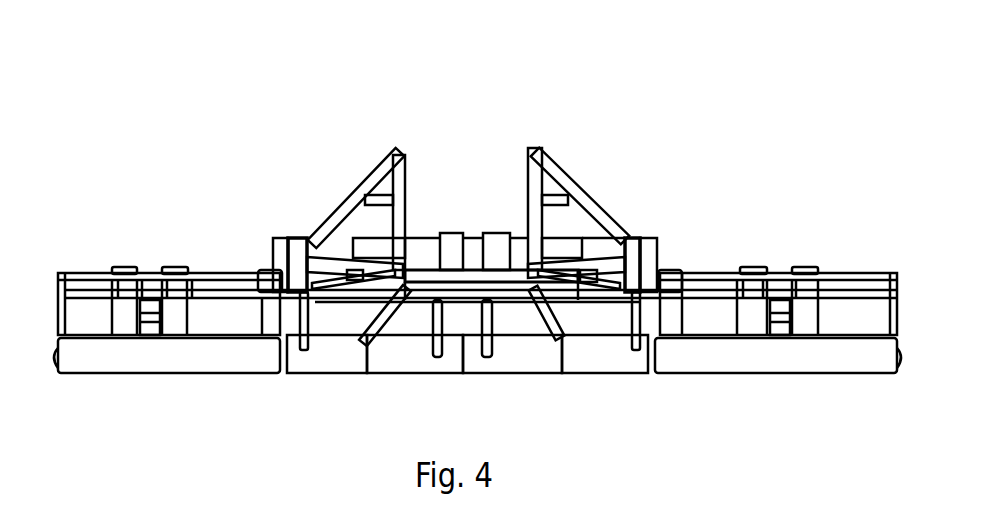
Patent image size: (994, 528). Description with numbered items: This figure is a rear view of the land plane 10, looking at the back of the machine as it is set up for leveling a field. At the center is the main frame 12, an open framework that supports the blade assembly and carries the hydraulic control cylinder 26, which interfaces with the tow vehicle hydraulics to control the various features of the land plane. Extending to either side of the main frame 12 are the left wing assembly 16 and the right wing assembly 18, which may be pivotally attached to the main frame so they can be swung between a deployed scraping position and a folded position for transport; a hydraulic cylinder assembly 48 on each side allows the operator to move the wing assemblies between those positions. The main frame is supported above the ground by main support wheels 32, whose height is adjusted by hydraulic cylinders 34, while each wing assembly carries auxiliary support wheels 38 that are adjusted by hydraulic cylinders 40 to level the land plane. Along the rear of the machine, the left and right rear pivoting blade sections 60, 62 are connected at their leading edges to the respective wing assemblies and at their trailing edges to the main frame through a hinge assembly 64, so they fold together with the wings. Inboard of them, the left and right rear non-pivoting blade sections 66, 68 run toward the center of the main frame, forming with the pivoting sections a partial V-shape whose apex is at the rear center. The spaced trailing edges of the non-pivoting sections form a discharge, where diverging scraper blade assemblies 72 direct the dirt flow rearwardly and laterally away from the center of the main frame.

The land plane 10 is at (228, 83).
The main frame 12 is at (440, 270).
The left wing assembly 16 is at (723, 275).
The right wing assembly 18 is at (214, 277).
The hydraulic control cylinder 26 is at (473, 255).
The main support wheels 32 is at (266, 270).
The hydraulic cylinders 34 is at (280, 263).
The auxiliary support wheels 38 is at (122, 268).
The hydraulic cylinders 40 is at (149, 277).
The hydraulic cylinder assembly 48 is at (373, 238).
The left rear pivoting blade section 60 is at (145, 360).
The right rear pivoting blade section 62 is at (780, 360).
The hinge assembly 64 is at (350, 280).
The left rear non-pivoting blade section 66 is at (345, 363).
The right rear non-pivoting blade section 68 is at (595, 360).
The diverging scraper blade assemblies 72 is at (430, 368).